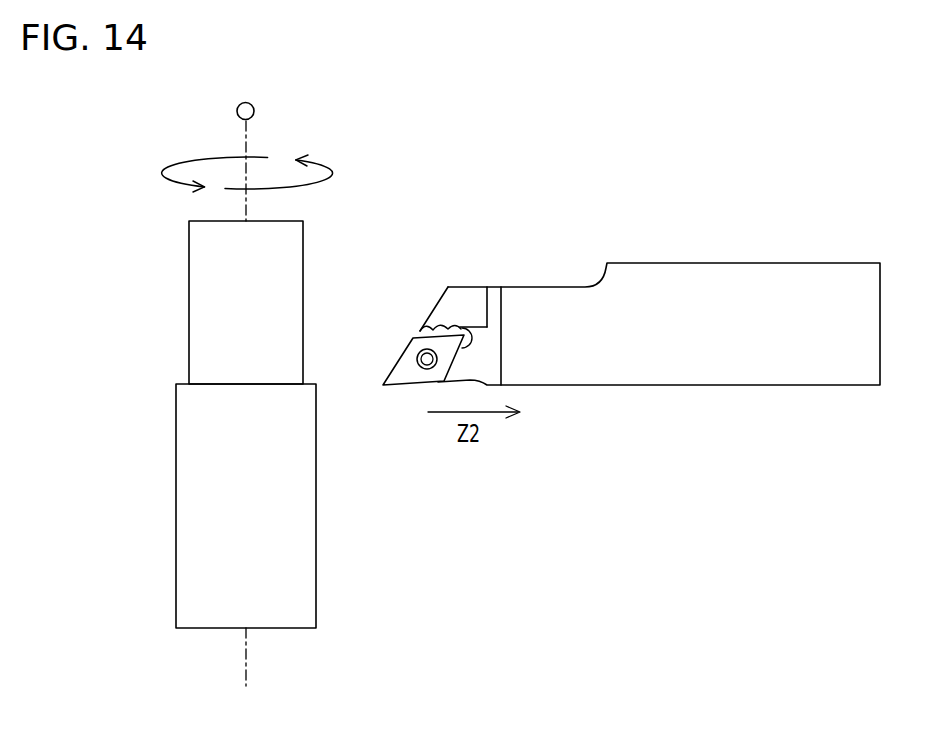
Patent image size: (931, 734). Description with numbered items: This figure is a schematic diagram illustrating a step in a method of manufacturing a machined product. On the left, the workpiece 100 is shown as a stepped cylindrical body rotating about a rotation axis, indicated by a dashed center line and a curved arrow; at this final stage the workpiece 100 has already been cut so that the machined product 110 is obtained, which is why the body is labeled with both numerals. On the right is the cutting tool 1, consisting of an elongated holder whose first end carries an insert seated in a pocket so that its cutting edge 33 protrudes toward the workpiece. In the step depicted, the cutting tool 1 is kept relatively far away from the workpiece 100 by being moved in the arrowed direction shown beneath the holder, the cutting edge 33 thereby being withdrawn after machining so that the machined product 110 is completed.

The cutting tool 1 is at (626, 307).
The cutting edge 33 is at (383, 387).
The workpiece 100 is at (305, 395).
The machined product 110 is at (316, 574).